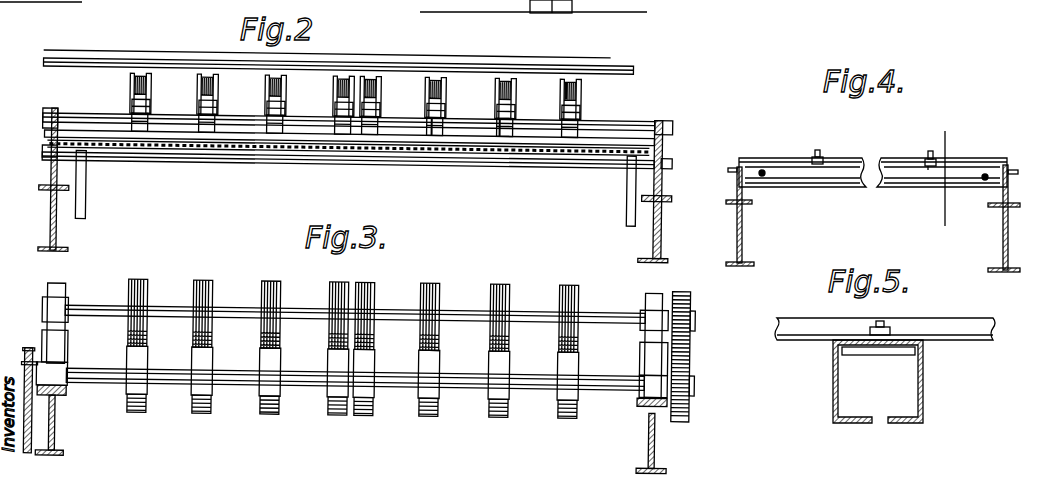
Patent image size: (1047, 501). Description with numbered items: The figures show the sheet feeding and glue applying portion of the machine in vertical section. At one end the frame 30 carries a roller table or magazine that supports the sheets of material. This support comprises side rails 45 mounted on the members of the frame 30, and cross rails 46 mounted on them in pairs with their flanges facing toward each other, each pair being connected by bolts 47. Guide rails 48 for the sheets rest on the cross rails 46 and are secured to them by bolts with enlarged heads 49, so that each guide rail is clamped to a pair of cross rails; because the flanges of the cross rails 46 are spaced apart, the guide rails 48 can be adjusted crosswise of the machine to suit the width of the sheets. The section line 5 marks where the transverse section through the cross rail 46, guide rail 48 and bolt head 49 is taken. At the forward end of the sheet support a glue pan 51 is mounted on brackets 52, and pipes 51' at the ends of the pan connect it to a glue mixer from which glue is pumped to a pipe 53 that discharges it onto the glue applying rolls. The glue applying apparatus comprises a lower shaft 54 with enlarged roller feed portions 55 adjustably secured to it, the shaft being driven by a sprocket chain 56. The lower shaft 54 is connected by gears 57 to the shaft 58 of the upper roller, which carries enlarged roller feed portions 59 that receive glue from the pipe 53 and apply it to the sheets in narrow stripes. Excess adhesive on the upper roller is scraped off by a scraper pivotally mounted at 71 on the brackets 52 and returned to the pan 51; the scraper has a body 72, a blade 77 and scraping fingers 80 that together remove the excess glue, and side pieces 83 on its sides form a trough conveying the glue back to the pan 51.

In FIG. 4, the section line 5— 5 is at (947, 180).
In FIG. 2, the frame 30 is at (661, 241).
In FIG. 3, the frame 30 is at (56, 429).
In FIG. 2, the side rails 45 is at (663, 190).
In FIG. 4, the side rails 45 is at (1006, 166).
In FIG. 4, the cross rails 46 is at (836, 178).
In FIG. 5, the cross rails 46 is at (923, 392).
In FIG. 4, the bolts 47 is at (762, 178).
In FIG. 4, the guide rails 48 is at (925, 158).
In FIG. 5, the guide rails 48 is at (943, 330).
In FIG. 4, the enlarged heads 49 is at (931, 170).
In FIG. 5, the enlarged heads 49 is at (884, 355).
In FIG. 2, the glue pan 51 is at (348, 128).
In FIG. 2, the pipes 51' is at (355, 187).
In FIG. 2, the brackets 52 is at (43, 135).
In FIG. 2, the pipe 53 is at (414, 60).
In FIG. 3, the lower shaft 54 is at (616, 382).
In FIG. 3, the roller feed portions 55 is at (504, 408).
In FIG. 3, the sprocket chain 56 is at (35, 407).
In FIG. 3, the gears 57 is at (688, 358).
In FIG. 3, the shaft of the upper roller 58 is at (606, 312).
In FIG. 3, the roller feed portions 59 is at (492, 290).
In FIG. 2, the pivot 71 is at (462, 114).
In FIG. 2, the body 72 is at (505, 124).
In FIG. 2, the blade 77 is at (579, 101).
In FIG. 2, the scraping fingers 80 is at (571, 80).
In FIG. 2, the side pieces 83 is at (289, 75).